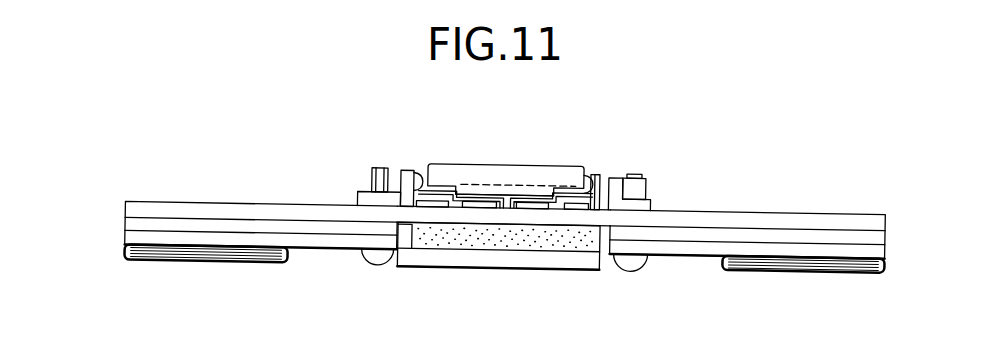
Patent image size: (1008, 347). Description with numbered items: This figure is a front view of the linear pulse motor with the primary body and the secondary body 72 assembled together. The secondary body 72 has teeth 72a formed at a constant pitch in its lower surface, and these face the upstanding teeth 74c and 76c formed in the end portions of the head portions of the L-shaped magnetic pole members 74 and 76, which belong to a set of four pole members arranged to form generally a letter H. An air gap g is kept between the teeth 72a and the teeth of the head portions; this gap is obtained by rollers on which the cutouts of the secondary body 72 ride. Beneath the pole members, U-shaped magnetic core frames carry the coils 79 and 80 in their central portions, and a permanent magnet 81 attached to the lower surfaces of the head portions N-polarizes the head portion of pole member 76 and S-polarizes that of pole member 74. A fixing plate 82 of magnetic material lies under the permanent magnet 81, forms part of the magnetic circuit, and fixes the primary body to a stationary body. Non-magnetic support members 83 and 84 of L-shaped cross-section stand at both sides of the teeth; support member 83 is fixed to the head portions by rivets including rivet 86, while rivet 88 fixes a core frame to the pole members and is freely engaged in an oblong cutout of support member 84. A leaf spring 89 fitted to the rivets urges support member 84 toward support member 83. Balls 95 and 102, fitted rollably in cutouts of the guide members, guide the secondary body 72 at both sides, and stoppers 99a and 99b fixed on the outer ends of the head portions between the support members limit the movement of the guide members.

The secondary body 72 is at (487, 163).
The teeth 72a is at (540, 187).
The magnetic pole member 74 is at (767, 213).
The teeth 74c is at (528, 200).
The magnetic pole member 76 is at (262, 209).
The teeth 76c is at (475, 199).
The coil 79 is at (805, 262).
The coil 80 is at (187, 258).
The permanent magnet 81 is at (417, 240).
The fixing plate 82 is at (505, 233).
The support member 83 is at (365, 199).
The support member 84 is at (648, 200).
The rivet 86 is at (381, 171).
The rivet 88 is at (637, 170).
The leaf spring 89 is at (640, 185).
The ball 95 is at (414, 171).
The stopper 99a is at (572, 204).
The stopper 99b is at (438, 204).
The ball 102 is at (598, 175).
The air gap g is at (513, 190).